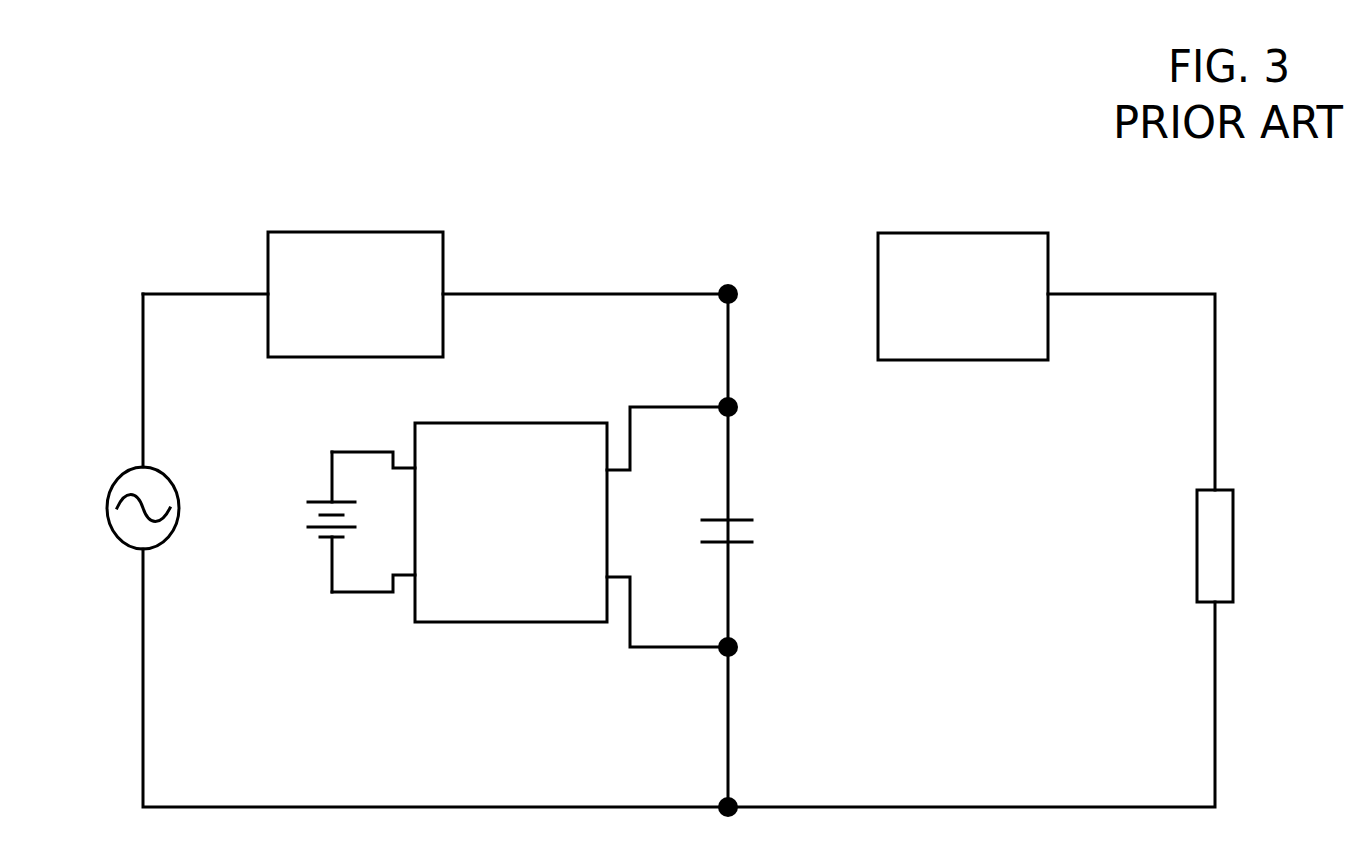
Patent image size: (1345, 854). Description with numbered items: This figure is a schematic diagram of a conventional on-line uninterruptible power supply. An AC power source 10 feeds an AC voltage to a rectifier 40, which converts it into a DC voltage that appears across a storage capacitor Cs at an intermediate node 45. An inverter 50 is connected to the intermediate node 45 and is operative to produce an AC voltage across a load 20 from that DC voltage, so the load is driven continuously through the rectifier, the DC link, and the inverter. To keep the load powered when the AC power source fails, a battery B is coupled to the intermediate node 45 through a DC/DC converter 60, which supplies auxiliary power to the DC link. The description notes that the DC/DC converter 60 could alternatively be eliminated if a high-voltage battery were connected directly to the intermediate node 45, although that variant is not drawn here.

The AC power source 10 is at (122, 547).
The rectifier 40 is at (392, 229).
The intermediate node 45 is at (582, 291).
The inverter 50 is at (998, 232).
The DC/DC converter 60 is at (557, 622).
The battery B is at (335, 518).
The storage capacitor Cs is at (733, 530).
The load 20 is at (1233, 578).